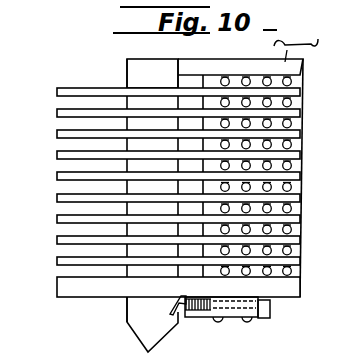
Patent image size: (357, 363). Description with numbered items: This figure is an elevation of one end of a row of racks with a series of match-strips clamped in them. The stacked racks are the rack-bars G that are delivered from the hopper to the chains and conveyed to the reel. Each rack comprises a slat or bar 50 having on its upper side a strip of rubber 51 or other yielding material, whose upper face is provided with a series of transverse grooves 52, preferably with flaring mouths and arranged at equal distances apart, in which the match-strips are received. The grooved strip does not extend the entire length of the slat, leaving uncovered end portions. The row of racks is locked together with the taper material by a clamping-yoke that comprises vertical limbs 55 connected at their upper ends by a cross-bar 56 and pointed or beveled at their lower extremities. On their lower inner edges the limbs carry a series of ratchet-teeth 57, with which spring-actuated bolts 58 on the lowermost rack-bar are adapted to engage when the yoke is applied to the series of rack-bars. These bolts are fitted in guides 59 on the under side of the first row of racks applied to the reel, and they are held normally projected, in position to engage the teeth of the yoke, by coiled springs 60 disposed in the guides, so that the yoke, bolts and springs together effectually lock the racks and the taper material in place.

The rack-bars G is at (184, 192).
The slat or bar 50 is at (60, 134).
The strip of rubber 51 is at (302, 152).
The transverse grooves 52 is at (302, 135).
The vertical limbs 55 is at (135, 75).
The cross-bar 56 is at (303, 62).
The ratchet-teeth 57 is at (175, 308).
The spring-actuated bolts 58 is at (265, 318).
The guides 59 is at (235, 315).
The coiled springs 60 is at (193, 310).